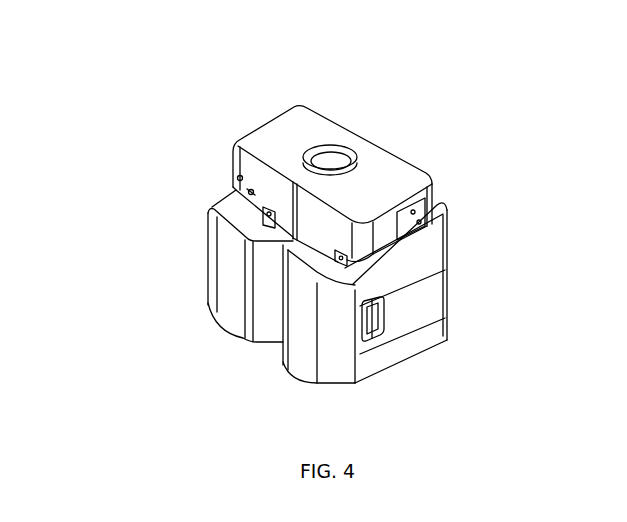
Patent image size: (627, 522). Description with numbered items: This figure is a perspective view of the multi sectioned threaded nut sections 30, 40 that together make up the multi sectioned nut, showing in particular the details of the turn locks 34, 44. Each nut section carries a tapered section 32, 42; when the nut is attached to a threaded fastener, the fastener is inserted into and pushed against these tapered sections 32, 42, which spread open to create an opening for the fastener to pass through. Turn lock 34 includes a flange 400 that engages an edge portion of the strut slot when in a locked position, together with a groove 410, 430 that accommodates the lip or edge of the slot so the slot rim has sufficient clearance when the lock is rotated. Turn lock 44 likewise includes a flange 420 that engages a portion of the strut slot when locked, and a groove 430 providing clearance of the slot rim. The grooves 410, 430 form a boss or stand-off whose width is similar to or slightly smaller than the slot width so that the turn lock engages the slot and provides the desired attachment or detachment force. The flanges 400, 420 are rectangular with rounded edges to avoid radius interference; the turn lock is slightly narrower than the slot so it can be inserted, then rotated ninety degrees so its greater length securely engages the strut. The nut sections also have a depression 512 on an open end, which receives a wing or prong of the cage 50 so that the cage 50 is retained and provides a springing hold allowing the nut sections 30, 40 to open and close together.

The threaded nut section 30 is at (377, 187).
The threaded nut section 40 is at (285, 137).
The turn lock 44 is at (236, 179).
The flange 420 is at (248, 192).
The groove 430 is at (264, 210).
The groove 410 is at (336, 257).
The turn lock 34 is at (420, 205).
The flange 400 is at (450, 226).
The cage 50 is at (408, 298).
The depression 512 is at (378, 342).
The tapered section 32 is at (287, 362).
The tapered section 42 is at (255, 338).